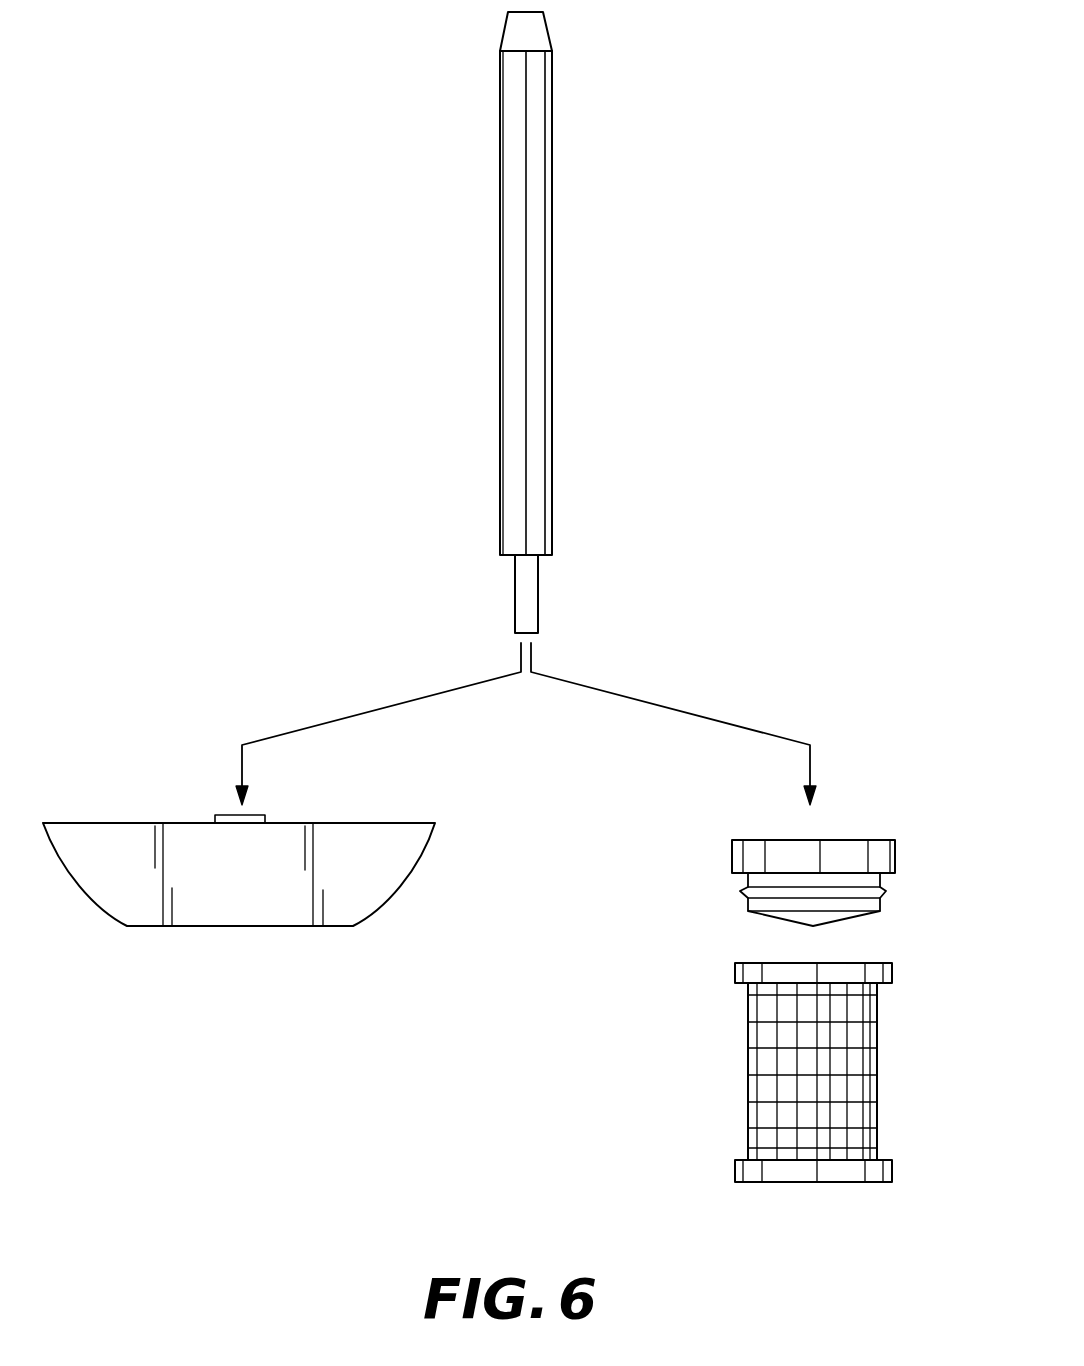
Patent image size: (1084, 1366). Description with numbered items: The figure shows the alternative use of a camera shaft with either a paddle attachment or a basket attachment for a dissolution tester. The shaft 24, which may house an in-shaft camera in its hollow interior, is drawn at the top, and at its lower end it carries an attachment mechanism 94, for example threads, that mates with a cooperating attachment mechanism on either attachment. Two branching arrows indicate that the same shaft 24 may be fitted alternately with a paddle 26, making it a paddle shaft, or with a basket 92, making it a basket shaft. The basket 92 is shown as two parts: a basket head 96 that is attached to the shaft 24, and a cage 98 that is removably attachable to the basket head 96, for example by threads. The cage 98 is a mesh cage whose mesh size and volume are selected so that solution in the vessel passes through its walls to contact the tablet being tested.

The shaft 24 is at (552, 198).
The attachment mechanism 94 is at (538, 616).
The paddle 26 is at (240, 926).
The basket 92 is at (788, 979).
The basket head 96 is at (828, 840).
The cage 98 is at (877, 1035).